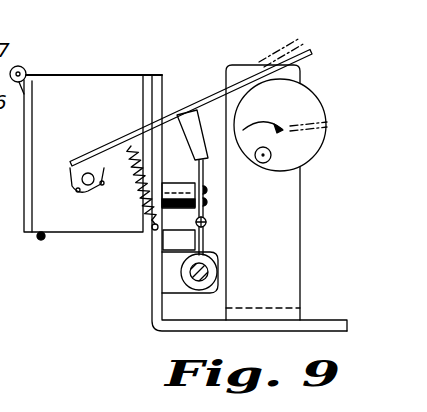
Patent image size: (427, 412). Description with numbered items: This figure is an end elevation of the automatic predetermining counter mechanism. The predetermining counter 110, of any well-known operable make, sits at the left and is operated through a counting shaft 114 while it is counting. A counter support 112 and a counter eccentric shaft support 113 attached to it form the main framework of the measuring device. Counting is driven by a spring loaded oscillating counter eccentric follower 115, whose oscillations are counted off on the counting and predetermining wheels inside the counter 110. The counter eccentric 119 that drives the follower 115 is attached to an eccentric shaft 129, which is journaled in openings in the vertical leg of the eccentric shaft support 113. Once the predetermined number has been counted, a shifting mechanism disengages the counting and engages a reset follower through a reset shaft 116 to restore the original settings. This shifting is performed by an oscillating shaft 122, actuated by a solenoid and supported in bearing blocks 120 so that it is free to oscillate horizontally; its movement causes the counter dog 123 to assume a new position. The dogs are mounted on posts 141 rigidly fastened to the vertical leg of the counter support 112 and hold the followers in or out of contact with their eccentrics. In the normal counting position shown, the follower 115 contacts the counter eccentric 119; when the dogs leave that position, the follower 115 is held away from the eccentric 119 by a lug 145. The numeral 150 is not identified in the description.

The predetermining counter 110 is at (63, 222).
The counter support 112 is at (152, 273).
The counter eccentric shaft support 113 is at (298, 228).
The counting shaft 114 is at (90, 188).
The counter eccentric follower 115 is at (111, 144).
The reset shaft 116 is at (6, 131).
The counter eccentric 119 is at (305, 97).
The bearing block 120 is at (168, 283).
The oscillating shaft 122 is at (192, 272).
The counter dog 123 is at (203, 237).
The eccentric shaft 129 is at (272, 155).
The post 141 is at (185, 200).
The lug 145 is at (201, 121).
The partial numeral 150 is at (8, 155).